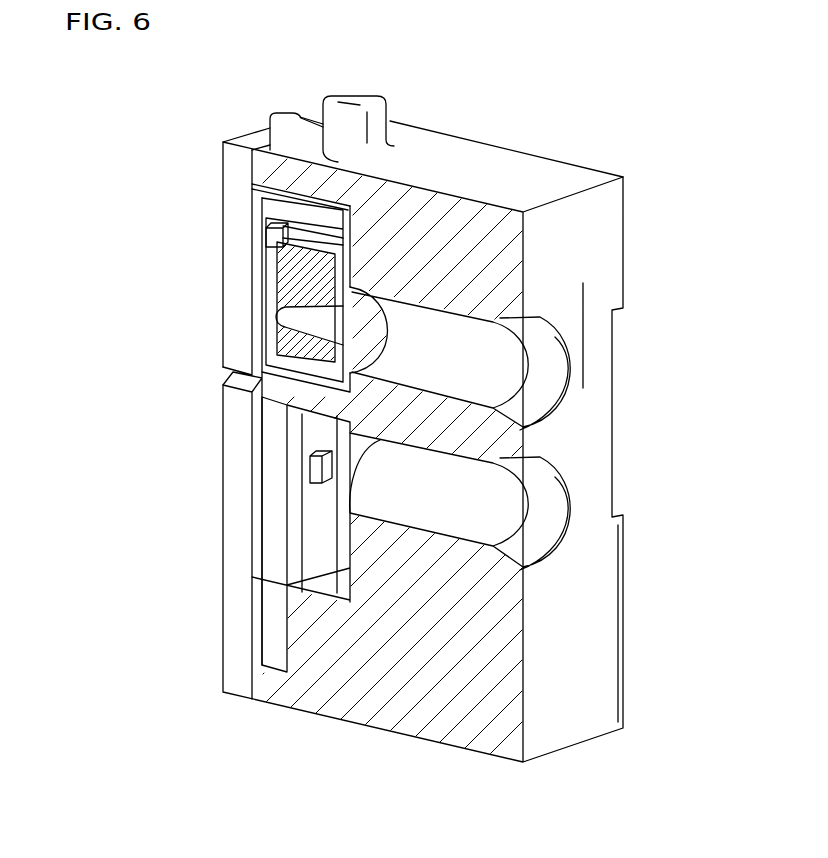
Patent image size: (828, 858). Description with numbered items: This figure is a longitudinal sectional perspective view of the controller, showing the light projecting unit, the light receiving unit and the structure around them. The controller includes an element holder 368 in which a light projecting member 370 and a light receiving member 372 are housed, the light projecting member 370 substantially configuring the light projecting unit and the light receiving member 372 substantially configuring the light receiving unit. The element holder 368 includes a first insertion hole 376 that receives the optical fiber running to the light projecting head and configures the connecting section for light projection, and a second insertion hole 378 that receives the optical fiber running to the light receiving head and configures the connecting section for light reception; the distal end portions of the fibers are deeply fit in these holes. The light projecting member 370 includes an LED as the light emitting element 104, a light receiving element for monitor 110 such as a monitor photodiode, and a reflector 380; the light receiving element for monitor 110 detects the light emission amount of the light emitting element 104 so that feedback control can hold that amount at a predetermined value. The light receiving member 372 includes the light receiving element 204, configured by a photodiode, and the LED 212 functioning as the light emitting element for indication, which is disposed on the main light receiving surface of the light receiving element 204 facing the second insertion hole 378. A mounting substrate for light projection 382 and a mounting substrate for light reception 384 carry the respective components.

The element holder 368 is at (490, 234).
The light projecting member 370 is at (316, 213).
The mounting substrate for light projection 382 is at (237, 197).
The light receiving element for monitor 110 is at (268, 238).
The light emitting element 104 is at (272, 305).
The reflector 380 is at (290, 347).
The first insertion hole 376 is at (497, 383).
The second insertion hole 378 is at (497, 512).
The light receiving member 372 is at (295, 551).
The mounting substrate for light reception 384 is at (265, 530).
The light receiving element 204 is at (290, 490).
The LED 212 is at (321, 467).